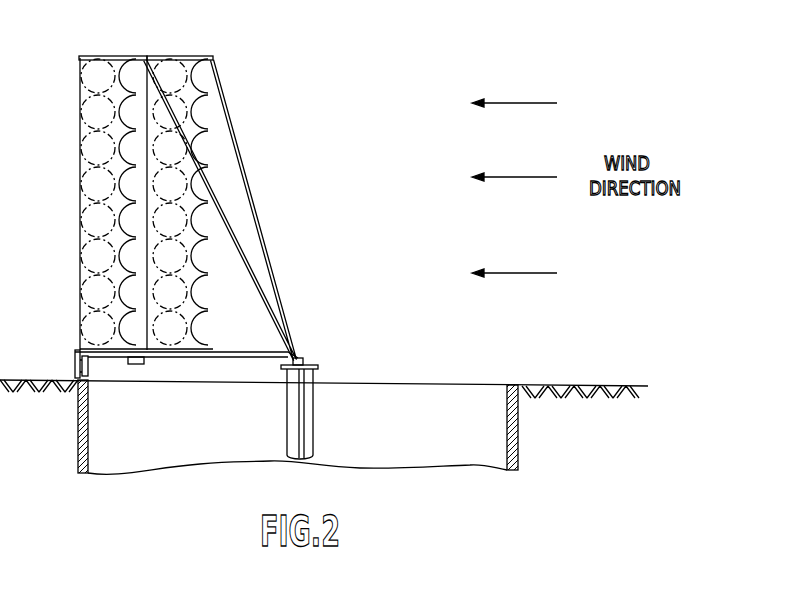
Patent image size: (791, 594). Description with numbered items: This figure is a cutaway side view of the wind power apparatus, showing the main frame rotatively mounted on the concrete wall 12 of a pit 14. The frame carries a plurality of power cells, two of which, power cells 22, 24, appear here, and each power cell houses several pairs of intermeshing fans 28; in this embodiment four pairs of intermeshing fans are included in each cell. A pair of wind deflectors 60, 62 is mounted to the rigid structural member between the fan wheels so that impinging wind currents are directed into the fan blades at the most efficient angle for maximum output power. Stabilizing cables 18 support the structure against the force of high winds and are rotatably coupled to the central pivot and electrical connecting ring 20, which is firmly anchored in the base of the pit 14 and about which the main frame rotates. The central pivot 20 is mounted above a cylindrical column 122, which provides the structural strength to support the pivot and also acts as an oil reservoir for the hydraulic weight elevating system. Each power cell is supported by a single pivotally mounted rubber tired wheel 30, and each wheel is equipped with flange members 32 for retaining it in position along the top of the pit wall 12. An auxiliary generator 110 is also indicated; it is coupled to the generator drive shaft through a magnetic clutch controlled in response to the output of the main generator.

The concrete wall 12 is at (518, 426).
The pit 14 is at (433, 432).
The stabilizing cables 18 is at (243, 172).
The central pivot and electrical connecting ring 20 is at (303, 360).
The power cell 22 is at (193, 57).
The power cell 24 is at (101, 57).
The intermeshing fans 28 is at (195, 92).
The rubber tired wheel 30 is at (88, 380).
The flange members 32 is at (72, 364).
The wind deflector 60 is at (195, 126).
The wind deflector 62 is at (196, 212).
The auxiliary generator 110 is at (145, 365).
The cylindrical column 122 is at (313, 418).